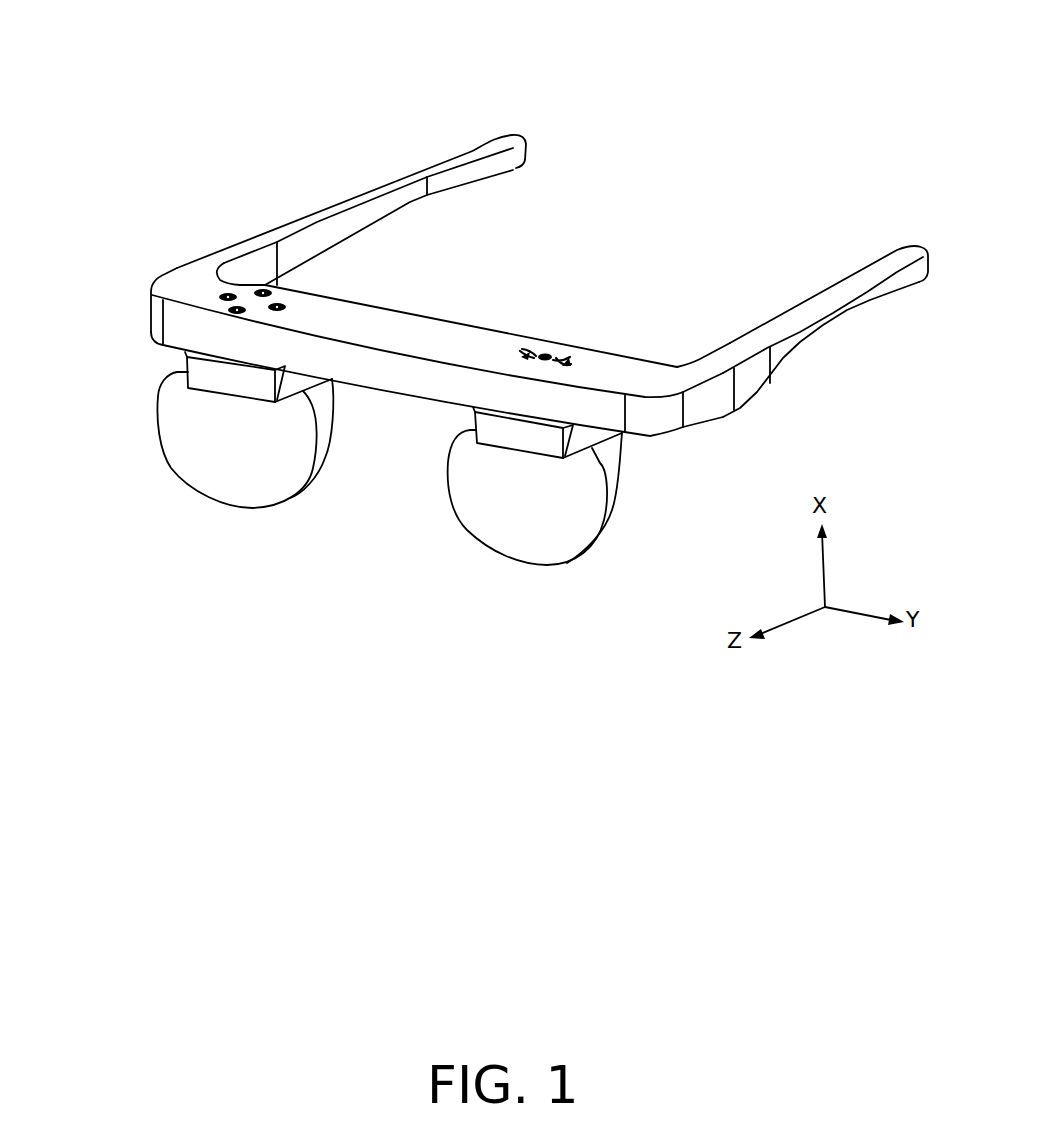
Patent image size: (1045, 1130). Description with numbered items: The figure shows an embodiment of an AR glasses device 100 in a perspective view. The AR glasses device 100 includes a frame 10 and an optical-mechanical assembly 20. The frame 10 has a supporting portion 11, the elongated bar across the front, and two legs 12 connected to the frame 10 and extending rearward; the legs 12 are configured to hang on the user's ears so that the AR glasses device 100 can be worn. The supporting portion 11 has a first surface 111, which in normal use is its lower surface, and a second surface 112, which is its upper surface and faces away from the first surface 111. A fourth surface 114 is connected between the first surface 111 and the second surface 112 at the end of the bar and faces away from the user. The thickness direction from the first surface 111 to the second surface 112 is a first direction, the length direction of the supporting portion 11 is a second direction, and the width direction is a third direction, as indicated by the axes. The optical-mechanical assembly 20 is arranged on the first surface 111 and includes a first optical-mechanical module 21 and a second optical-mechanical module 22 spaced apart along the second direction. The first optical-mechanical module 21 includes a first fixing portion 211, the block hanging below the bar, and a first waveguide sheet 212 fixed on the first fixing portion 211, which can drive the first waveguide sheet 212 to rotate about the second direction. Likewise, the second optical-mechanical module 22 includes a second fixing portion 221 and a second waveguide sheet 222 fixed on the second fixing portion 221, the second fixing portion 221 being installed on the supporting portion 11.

The AR glasses device 100 is at (592, 31).
The frame 10 is at (320, 166).
The supporting portion 11 is at (325, 323).
The legs 12 is at (262, 257).
The first surface 111 is at (425, 396).
The second surface 112 is at (415, 344).
The fourth surface 114 is at (190, 323).
The optical-mechanical assembly 20 is at (225, 537).
The first optical-mechanical module 21 is at (84, 372).
The first fixing portion 211 is at (187, 357).
The first waveguide sheet 212 is at (183, 432).
The second optical-mechanical module 22 is at (698, 448).
The second fixing portion 221 is at (577, 435).
The second waveguide sheet 222 is at (587, 513).